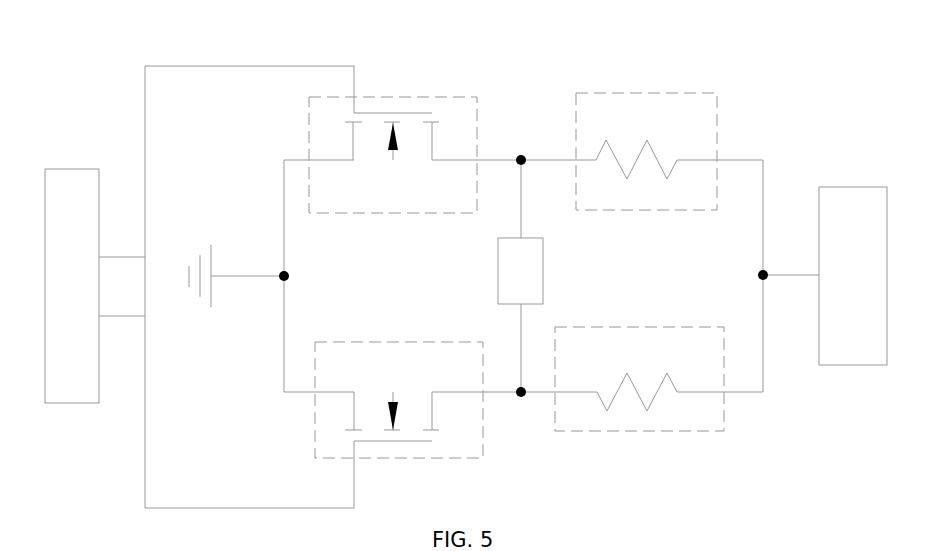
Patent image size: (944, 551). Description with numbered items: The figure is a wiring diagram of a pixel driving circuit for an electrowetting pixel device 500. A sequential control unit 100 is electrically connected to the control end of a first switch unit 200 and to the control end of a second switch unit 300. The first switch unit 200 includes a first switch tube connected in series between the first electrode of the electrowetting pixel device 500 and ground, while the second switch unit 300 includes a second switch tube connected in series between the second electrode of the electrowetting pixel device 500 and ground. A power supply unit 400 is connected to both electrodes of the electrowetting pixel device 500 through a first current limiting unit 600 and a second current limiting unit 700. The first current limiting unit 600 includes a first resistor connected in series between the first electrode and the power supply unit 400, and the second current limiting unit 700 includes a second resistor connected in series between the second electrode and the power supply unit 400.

The sequential control unit 100 is at (65, 169).
The first switch unit 200 is at (414, 97).
The second switch unit 300 is at (460, 458).
The power supply unit 400 is at (851, 187).
The electrowetting pixel device 500 is at (543, 270).
The first current limiting unit 600 is at (650, 93).
The second current limiting unit 700 is at (635, 431).